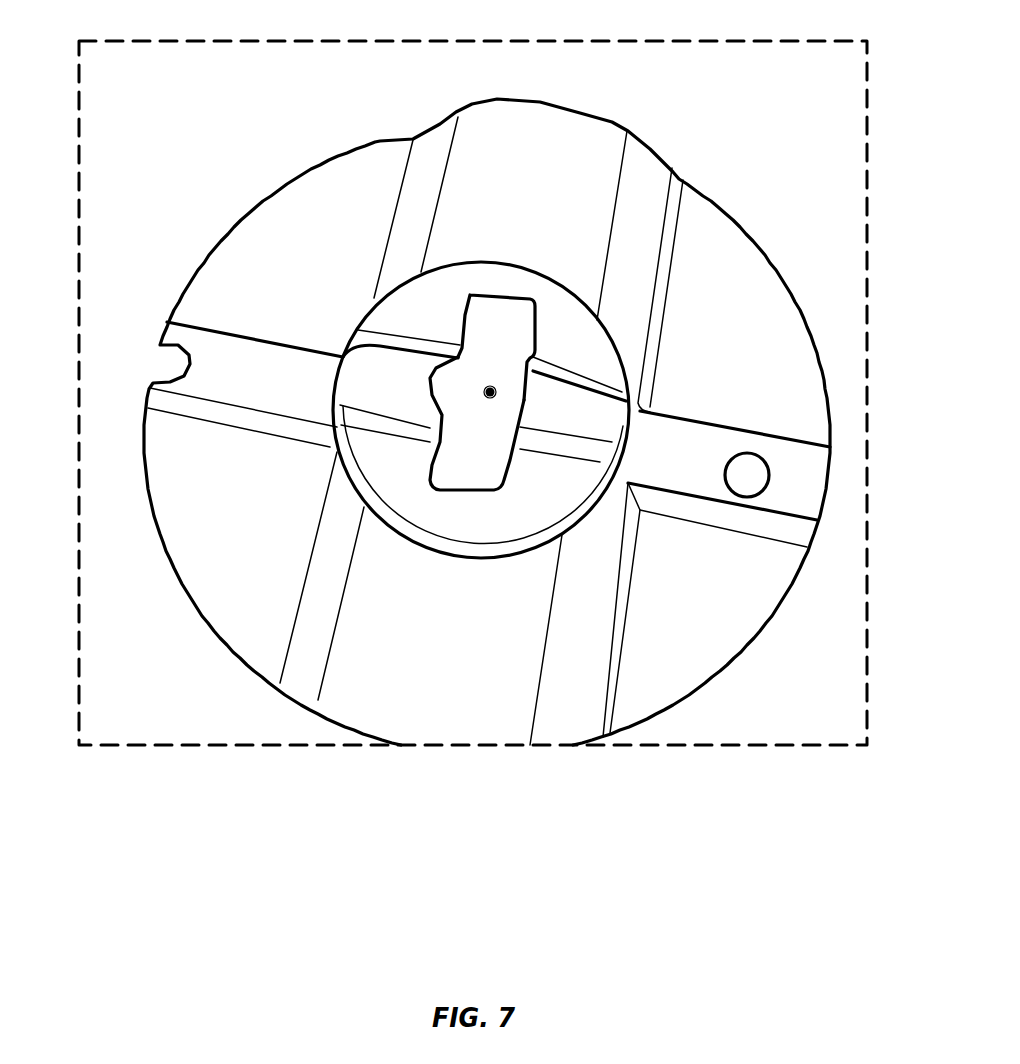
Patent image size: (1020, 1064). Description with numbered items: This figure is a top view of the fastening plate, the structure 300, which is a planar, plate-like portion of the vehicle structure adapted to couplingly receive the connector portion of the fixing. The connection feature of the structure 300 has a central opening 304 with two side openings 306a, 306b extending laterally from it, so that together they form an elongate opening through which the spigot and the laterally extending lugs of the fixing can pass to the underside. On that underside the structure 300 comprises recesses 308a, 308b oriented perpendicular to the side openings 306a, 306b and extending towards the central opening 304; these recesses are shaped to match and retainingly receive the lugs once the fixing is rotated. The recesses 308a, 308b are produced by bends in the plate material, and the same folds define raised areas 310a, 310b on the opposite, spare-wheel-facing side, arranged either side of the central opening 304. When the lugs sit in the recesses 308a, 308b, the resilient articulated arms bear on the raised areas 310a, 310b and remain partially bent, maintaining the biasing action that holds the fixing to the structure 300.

The structure 300 is at (623, 78).
The central opening 304 is at (497, 390).
The side opening 306a is at (490, 317).
The side opening 306b is at (472, 468).
The recess 308a is at (443, 373).
The recess 308b is at (521, 399).
The raised area 310a is at (387, 367).
The raised area 310b is at (578, 410).